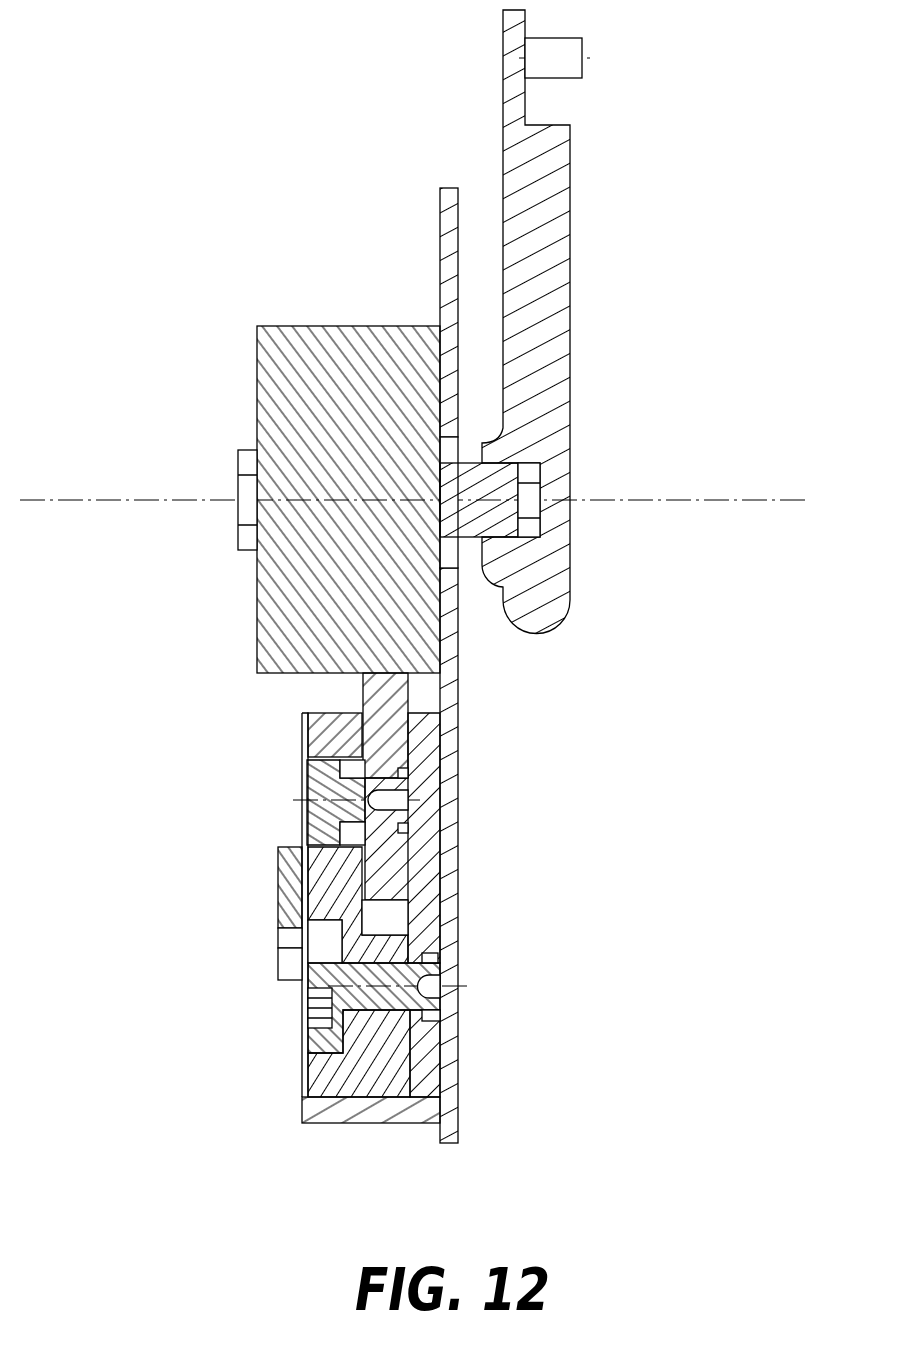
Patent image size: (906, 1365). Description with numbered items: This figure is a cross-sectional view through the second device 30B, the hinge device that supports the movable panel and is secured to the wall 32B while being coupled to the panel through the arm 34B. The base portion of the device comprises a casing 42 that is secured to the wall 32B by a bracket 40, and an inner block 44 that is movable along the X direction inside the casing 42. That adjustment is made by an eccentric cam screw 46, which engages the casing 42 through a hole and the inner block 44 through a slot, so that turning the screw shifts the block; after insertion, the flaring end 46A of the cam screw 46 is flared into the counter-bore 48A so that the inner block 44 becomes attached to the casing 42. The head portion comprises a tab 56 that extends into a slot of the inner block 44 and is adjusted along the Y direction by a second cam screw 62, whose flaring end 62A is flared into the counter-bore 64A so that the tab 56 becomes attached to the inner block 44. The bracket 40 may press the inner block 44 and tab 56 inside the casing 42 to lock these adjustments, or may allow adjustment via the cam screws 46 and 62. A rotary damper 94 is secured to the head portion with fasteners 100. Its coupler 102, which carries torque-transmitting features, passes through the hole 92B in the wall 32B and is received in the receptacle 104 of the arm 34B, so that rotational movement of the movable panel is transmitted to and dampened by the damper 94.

The second device 30B is at (239, 139).
The wall 32B is at (440, 217).
The arm 34B is at (570, 225).
The bracket 40 is at (282, 910).
The casing 42 is at (323, 1123).
The inner block 44 is at (320, 1080).
The cam screw 46 is at (320, 980).
The flaring end 46A is at (430, 968).
The counter-bore 48A is at (433, 1013).
The tab 56 is at (377, 703).
The cam screw 62 is at (320, 783).
The flaring end 62A is at (393, 787).
The counter-bore 64A is at (399, 828).
The hole 92B is at (457, 552).
The damper 94 is at (324, 343).
The fasteners 100 is at (247, 470).
The coupler 102 is at (487, 518).
The receptacle 104 is at (533, 492).